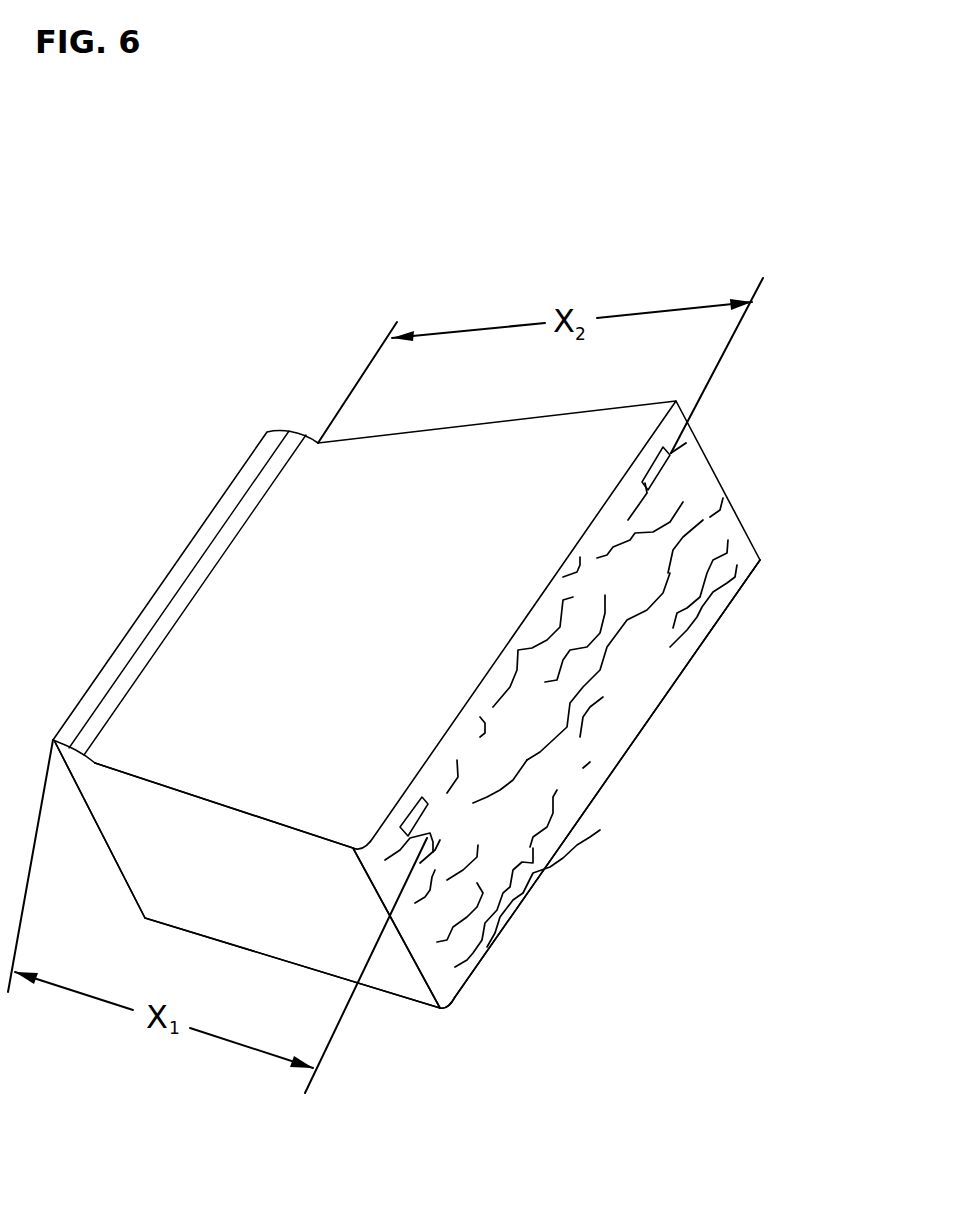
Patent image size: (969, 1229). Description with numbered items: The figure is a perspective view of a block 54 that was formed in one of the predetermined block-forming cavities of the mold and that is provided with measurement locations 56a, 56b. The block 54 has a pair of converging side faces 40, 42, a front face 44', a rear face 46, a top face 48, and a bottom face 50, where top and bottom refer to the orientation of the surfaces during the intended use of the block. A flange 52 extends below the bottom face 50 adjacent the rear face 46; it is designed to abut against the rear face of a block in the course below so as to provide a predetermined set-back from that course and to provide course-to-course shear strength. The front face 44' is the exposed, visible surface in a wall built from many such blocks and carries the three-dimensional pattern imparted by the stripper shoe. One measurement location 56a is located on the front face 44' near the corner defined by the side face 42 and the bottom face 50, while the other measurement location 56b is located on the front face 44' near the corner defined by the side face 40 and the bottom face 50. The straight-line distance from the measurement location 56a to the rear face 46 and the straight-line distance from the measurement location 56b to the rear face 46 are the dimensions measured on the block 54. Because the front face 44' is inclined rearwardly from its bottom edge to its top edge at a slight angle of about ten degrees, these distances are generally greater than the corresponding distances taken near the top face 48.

The side face 40 is at (747, 532).
The side face 42 is at (193, 888).
The front face 44' is at (584, 725).
The rear face 46 is at (118, 867).
The top face 48 is at (392, 997).
The bottom face 50 is at (325, 535).
The flange 52 is at (172, 572).
The block 54 is at (262, 968).
The measurement location 56a is at (425, 817).
The measurement location 56b is at (660, 472).